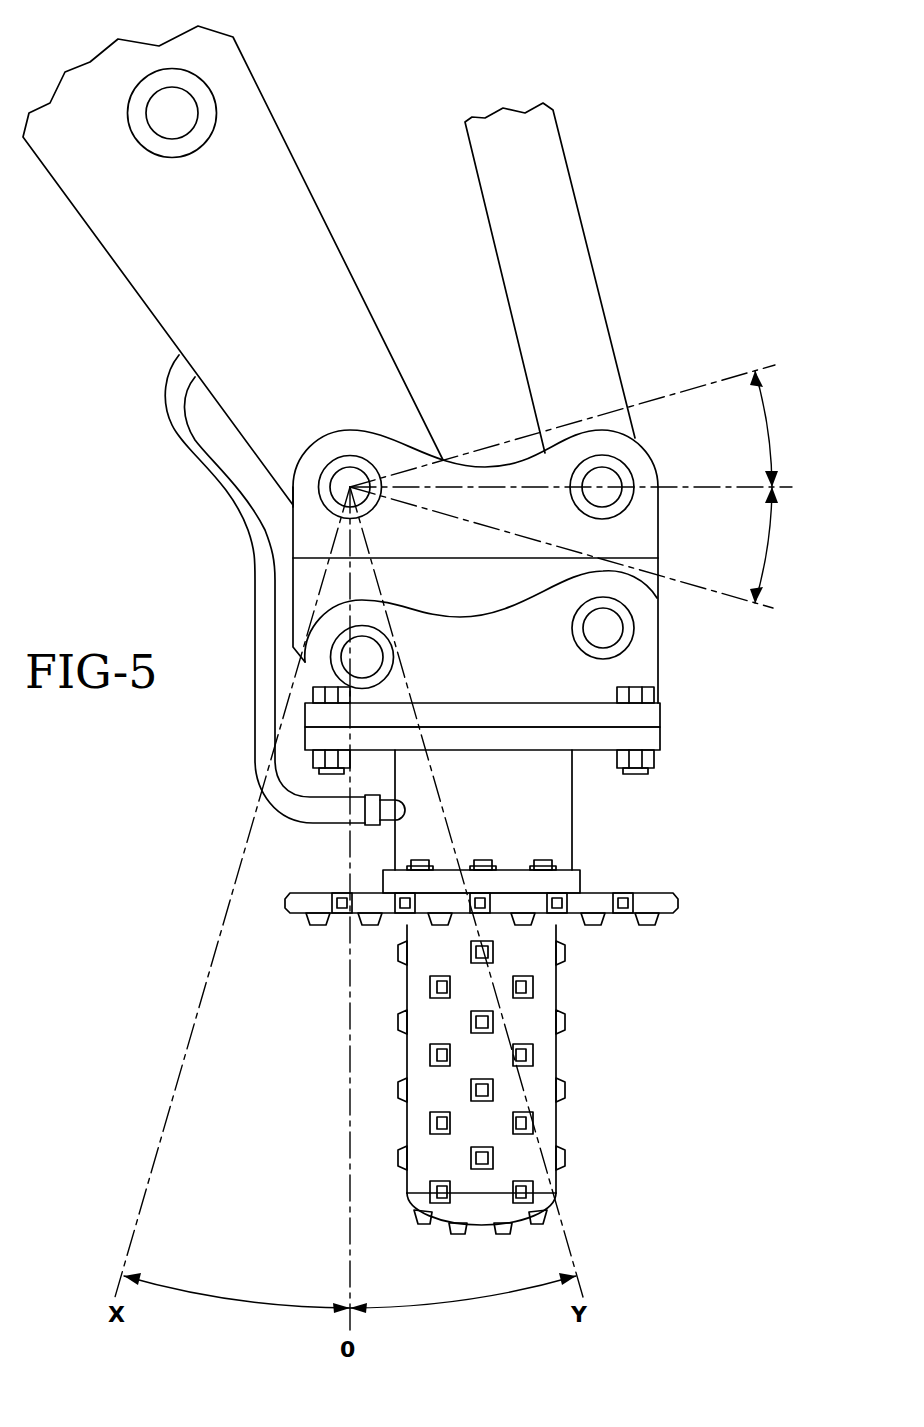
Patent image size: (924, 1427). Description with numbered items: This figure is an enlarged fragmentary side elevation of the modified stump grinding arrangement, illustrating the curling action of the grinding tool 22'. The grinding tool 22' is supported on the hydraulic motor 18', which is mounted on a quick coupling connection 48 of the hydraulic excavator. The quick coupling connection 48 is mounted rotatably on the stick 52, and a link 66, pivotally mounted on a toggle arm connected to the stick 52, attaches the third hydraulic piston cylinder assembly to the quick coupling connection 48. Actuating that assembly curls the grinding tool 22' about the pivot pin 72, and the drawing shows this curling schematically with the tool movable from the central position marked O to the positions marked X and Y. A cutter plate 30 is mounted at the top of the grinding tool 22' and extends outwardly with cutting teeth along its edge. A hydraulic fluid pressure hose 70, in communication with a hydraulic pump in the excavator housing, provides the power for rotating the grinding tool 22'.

The stick 52 is at (160, 248).
The link 66 is at (562, 230).
The pivot pin 72 is at (346, 489).
The quick coupling connection 48 is at (645, 650).
The hydraulic fluid pressure hose 70 is at (263, 714).
The hydraulic motor 18' is at (554, 821).
The cutter plate 30 is at (653, 902).
The grinding tool 22' is at (536, 1079).